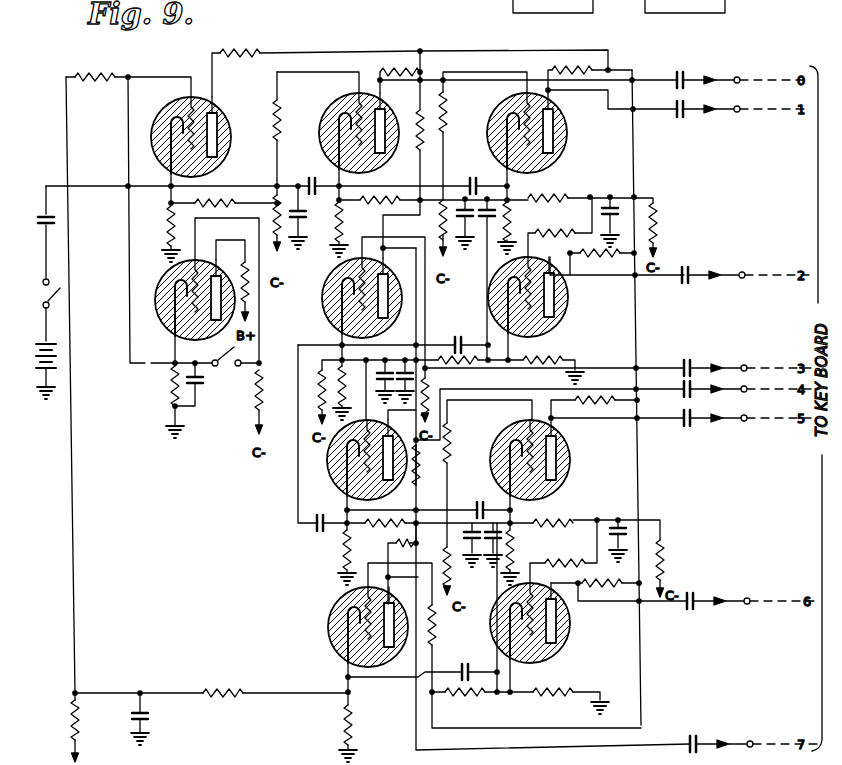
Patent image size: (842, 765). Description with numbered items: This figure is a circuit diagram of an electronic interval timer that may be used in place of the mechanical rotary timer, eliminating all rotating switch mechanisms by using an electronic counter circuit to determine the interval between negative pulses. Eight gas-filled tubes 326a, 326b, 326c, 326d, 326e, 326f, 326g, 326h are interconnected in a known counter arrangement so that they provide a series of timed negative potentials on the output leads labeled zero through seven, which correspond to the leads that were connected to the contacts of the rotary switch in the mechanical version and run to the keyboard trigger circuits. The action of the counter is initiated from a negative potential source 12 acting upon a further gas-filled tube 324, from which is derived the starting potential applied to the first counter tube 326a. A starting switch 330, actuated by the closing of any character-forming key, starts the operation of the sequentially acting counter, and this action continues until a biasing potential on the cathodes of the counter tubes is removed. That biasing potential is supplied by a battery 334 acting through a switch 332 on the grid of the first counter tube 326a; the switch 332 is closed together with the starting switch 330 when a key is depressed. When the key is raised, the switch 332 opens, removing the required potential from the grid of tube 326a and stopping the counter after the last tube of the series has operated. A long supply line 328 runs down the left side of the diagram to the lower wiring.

The gas-filled tube 324 is at (205, 114).
The gas-filled tube 326a is at (332, 110).
The gas-filled tube 326b is at (568, 137).
The gas-filled tube 326c is at (567, 298).
The gas-filled tube 326d is at (329, 280).
The gas-filled tube 326e is at (331, 481).
The gas-filled tube 326f is at (571, 477).
The gas-filled tube 326g is at (575, 635).
The gas-filled tube 326h is at (330, 630).
The supply line 328 is at (76, 490).
The starting switch 330 is at (225, 368).
The switch 332 is at (42, 298).
The battery 334 is at (38, 362).
The negative potential source 12 is at (280, 328).